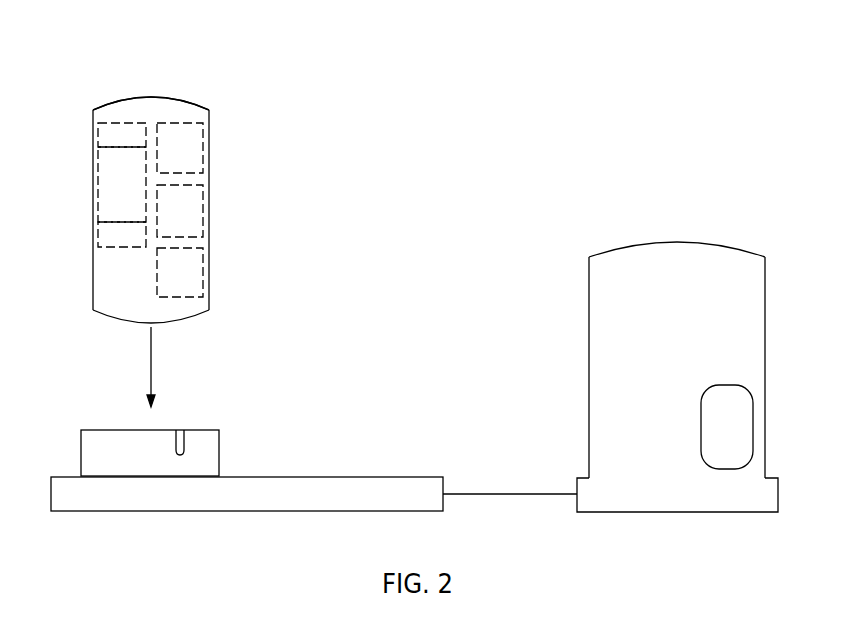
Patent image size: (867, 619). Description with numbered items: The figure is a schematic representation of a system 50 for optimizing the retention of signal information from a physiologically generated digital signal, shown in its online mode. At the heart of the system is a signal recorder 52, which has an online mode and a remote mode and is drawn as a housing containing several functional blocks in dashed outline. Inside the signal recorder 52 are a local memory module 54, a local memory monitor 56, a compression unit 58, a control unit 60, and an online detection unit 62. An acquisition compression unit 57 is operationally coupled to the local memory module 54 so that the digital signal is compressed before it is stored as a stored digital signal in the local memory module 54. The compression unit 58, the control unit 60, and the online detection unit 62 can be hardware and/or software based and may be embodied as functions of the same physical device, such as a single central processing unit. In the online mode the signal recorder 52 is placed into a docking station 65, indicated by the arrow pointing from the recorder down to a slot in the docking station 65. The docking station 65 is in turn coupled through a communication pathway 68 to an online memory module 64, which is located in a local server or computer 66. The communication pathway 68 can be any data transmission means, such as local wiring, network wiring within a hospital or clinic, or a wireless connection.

The system 50 is at (123, 64).
The signal recorder 52 is at (178, 97).
The local memory module 54 is at (98, 185).
The local memory monitor 56 is at (127, 248).
The acquisition compression unit 57 is at (127, 122).
The compression unit 58 is at (203, 147).
The control unit 60 is at (203, 210).
The online detection unit 62 is at (203, 275).
The online memory module 64 is at (727, 385).
The docking station 65 is at (243, 477).
The local server or computer 66 is at (608, 247).
The communication pathway 68 is at (542, 494).